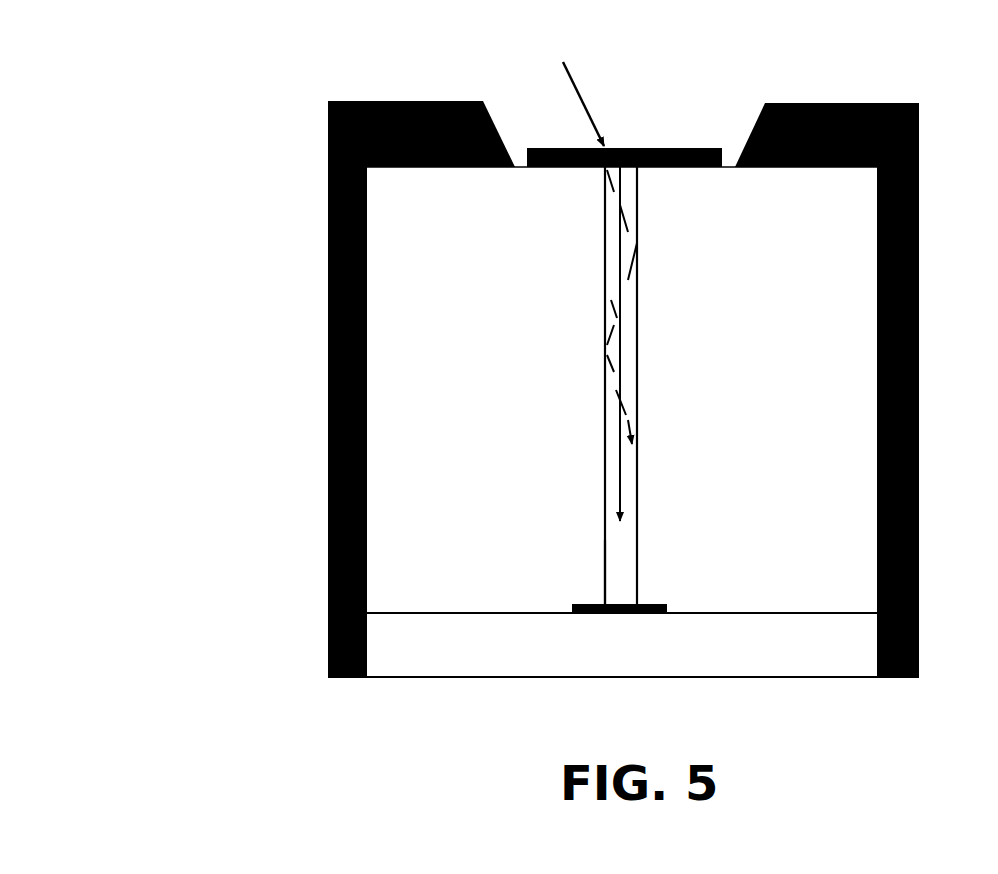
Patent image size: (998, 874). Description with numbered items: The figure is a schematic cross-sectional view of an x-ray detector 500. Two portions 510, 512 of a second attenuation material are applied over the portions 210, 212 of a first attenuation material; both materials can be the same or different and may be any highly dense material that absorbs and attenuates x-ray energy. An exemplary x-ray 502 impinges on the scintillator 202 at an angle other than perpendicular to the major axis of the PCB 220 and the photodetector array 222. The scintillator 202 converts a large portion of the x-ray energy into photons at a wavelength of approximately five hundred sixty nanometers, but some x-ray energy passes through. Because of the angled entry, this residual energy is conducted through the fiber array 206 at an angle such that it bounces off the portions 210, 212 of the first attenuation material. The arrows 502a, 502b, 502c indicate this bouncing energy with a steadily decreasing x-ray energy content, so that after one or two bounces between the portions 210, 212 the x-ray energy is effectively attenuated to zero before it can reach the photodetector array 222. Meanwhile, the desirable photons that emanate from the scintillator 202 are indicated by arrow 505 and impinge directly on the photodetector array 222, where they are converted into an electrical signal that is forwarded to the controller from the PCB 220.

The x-ray detector 500 is at (172, 70).
The x-ray 502 is at (578, 95).
The x-ray energy arrow 502a is at (613, 192).
The x-ray energy arrow 502b is at (615, 313).
The x-ray energy arrow 502c is at (612, 372).
The photon arrow 505 is at (620, 493).
The scintillator 202 is at (643, 148).
The fiber array 206 is at (613, 561).
The first attenuation material portion 210 is at (497, 228).
The first attenuation material portion 212 is at (785, 228).
The PCB 220 is at (432, 646).
The photodetector array 222 is at (620, 613).
The second attenuation material portion 510 is at (328, 295).
The second attenuation material portion 512 is at (918, 298).